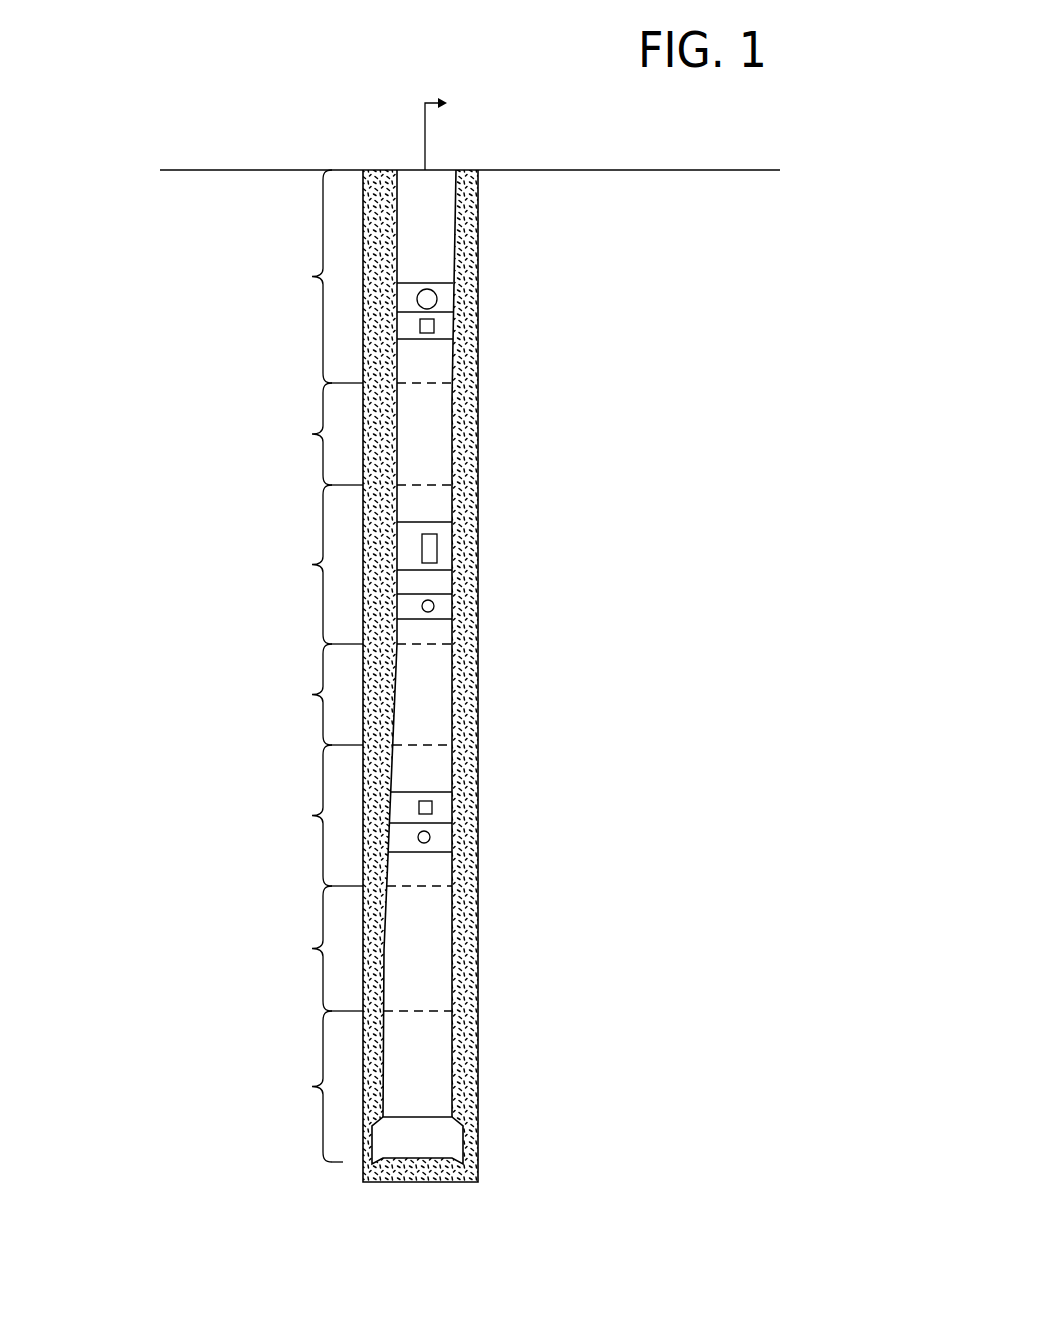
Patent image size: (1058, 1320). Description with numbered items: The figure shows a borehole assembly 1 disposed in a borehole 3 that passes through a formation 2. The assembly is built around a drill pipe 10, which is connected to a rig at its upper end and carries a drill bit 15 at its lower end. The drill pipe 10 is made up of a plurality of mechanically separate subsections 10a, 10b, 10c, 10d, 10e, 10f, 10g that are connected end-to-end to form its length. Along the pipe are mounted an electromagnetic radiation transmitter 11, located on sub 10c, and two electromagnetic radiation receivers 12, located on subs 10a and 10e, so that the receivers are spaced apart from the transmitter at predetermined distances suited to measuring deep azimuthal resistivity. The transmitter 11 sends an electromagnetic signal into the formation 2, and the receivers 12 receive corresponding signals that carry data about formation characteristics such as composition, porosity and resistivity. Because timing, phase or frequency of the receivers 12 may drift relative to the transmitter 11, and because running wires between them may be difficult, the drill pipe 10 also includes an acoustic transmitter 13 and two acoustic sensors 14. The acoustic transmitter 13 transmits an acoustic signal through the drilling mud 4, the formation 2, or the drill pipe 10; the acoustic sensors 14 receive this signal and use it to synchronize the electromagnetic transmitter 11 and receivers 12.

The borehole assembly 1 is at (437, 641).
The formation 2 is at (753, 497).
The borehole 3 is at (480, 940).
The drilling mud 4 is at (472, 693).
The drill pipe 10 is at (482, 455).
The subsection 10a is at (308, 276).
The subsection 10b is at (308, 434).
The subsection 10c is at (308, 564).
The subsection 10d is at (308, 694).
The subsection 10e is at (308, 815).
The subsection 10f is at (308, 948).
The subsection 10g is at (298, 1086).
The radiation transmitter 11 is at (443, 607).
The radiation receiver 12 is at (443, 302).
The acoustic transmitter 13 is at (445, 548).
The acoustic sensor 14 is at (445, 327).
The drill bit 15 is at (442, 1138).